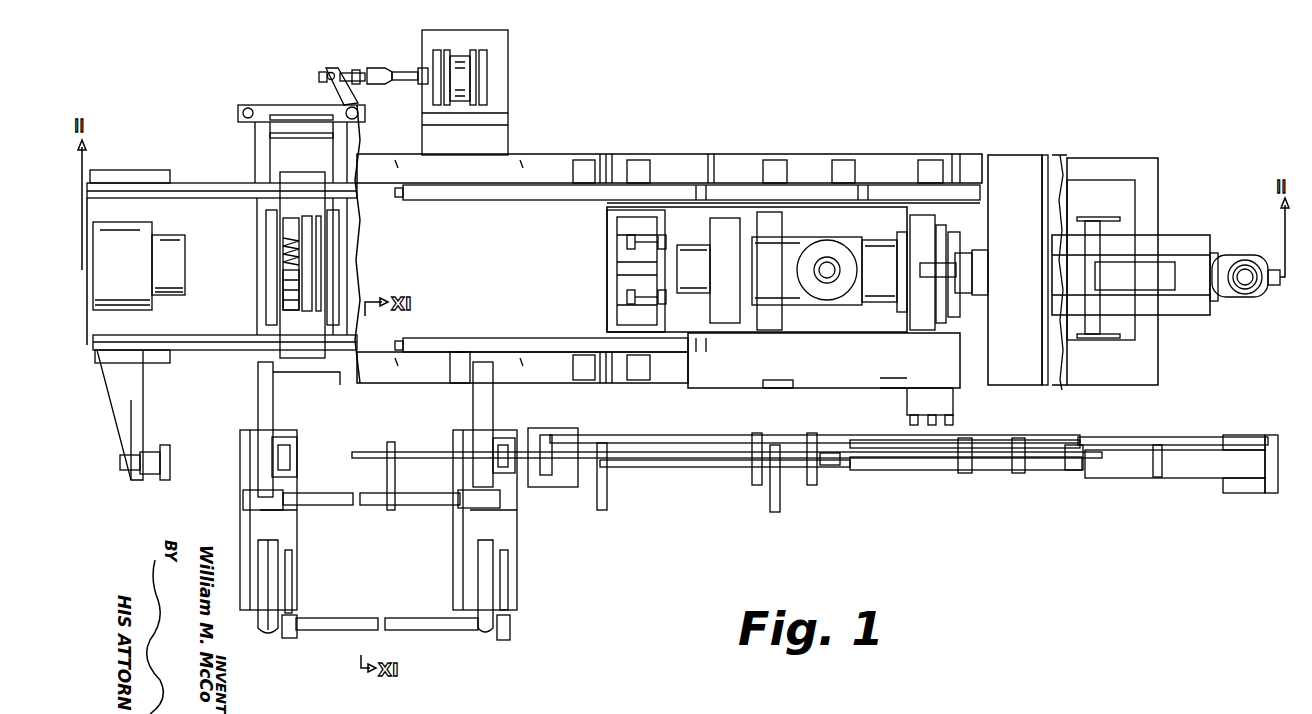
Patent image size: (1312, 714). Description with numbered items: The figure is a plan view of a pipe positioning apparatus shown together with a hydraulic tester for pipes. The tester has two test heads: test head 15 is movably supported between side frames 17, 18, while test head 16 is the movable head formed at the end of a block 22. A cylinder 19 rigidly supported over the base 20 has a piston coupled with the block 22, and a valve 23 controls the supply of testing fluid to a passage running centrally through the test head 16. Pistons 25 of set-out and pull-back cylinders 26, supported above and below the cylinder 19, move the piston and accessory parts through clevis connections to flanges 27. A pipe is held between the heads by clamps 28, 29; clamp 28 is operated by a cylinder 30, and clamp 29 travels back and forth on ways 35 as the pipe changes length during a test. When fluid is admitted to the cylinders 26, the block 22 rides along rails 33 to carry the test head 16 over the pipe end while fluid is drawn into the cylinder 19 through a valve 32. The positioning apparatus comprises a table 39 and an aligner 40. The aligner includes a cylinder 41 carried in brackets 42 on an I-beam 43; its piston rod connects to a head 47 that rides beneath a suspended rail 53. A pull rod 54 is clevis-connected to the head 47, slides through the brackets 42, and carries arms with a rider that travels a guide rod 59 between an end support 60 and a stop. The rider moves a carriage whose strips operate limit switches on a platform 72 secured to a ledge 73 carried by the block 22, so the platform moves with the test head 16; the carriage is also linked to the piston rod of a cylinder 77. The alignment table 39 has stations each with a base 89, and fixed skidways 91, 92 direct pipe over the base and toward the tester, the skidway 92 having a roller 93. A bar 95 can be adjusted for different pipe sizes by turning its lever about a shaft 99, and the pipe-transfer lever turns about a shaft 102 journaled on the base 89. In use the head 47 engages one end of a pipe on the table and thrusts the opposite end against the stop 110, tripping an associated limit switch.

The test head 15 is at (143, 237).
The test head 16 is at (693, 252).
The side frame 17 is at (233, 190).
The side frame 18 is at (222, 345).
The cylinder 19 is at (1190, 240).
The base 20 is at (1108, 170).
The block 22 is at (855, 292).
The valve 23 is at (816, 270).
The piston 25 is at (953, 250).
The set-out and pull-back cylinder 26 is at (1170, 292).
The flange 27 is at (935, 300).
The clamp 28 is at (290, 228).
The clamp 29 is at (630, 228).
The cylinder 30 is at (455, 55).
The valve 32 is at (1246, 270).
The rail 33 is at (795, 192).
The ways 35 is at (895, 205).
The table 39 is at (283, 524).
The aligner 40 is at (675, 470).
The cylinder 41 is at (905, 470).
The bracket 42 is at (965, 474).
The I-beam 43 is at (652, 462).
The head 47 is at (785, 480).
The rail 53 is at (830, 464).
The pull rod 54 is at (888, 440).
The guide rod 59 is at (698, 440).
The end support 60 is at (546, 435).
The platform 72 is at (950, 400).
The ledge 73 is at (812, 373).
The cylinder 77 is at (1200, 433).
The base 89 is at (262, 524).
The skidway 91 is at (268, 632).
The skidway 92 is at (262, 383).
The roller 93 is at (292, 457).
The bar 95 is at (291, 580).
The shaft 99 is at (373, 618).
The shaft 102 is at (442, 506).
The stop 110 is at (168, 460).